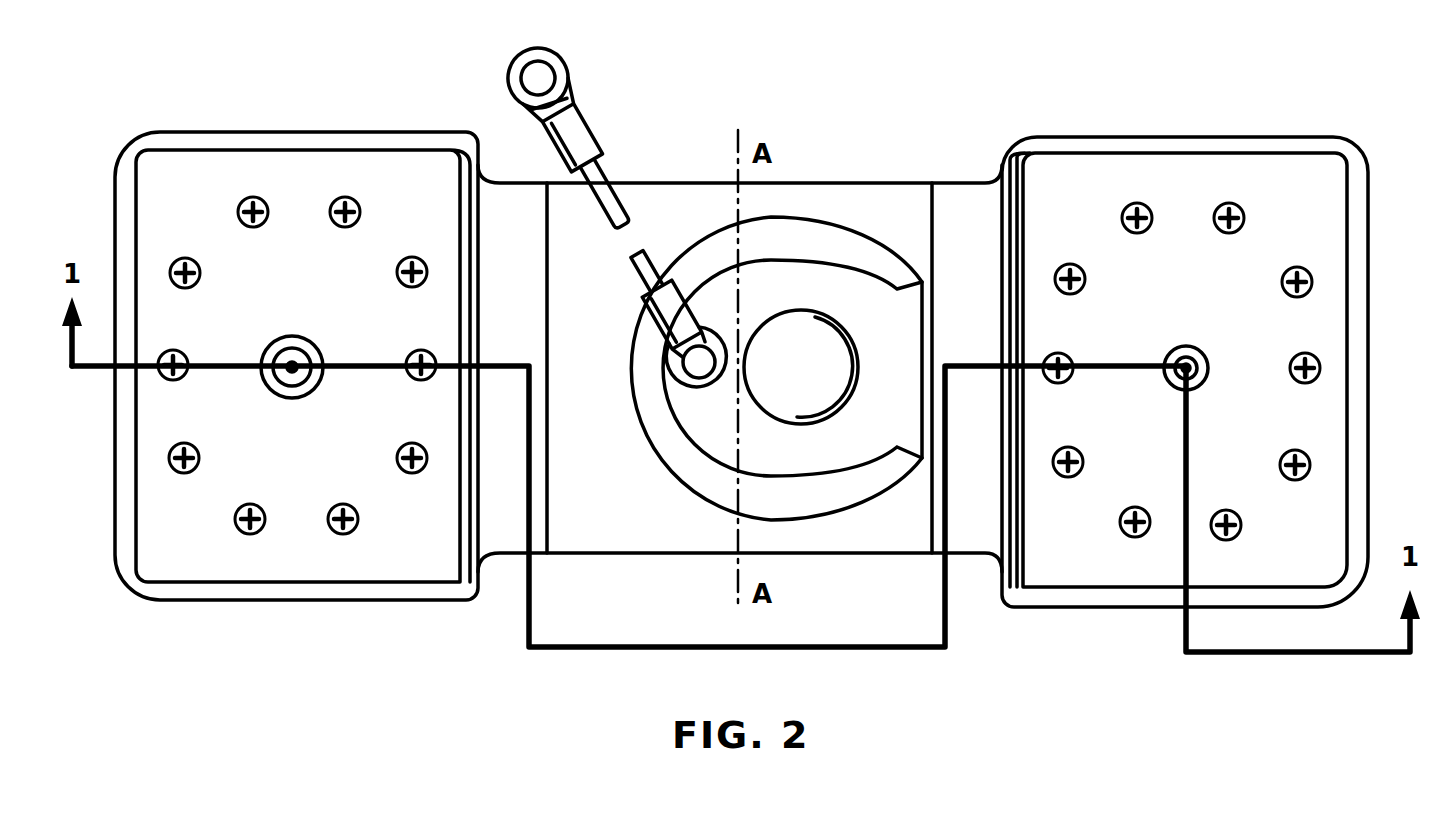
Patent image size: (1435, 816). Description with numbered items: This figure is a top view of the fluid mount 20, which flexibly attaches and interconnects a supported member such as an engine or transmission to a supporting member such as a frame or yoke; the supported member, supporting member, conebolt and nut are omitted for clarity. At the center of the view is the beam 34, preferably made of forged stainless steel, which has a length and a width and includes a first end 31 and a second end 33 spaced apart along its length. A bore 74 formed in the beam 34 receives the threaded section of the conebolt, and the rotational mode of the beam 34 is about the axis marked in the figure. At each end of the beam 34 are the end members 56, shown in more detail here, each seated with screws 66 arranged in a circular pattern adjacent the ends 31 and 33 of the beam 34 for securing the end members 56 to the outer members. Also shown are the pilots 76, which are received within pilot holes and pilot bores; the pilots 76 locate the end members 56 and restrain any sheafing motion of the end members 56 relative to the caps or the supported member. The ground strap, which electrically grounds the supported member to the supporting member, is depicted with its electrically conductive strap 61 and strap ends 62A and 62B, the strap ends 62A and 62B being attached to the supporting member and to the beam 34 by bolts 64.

The fluid mount 20 is at (98, 416).
The first end 31 is at (300, 140).
The second end 33 is at (1195, 142).
The beam 34 is at (604, 531).
The end member 56 is at (162, 174).
The strap 61 is at (657, 260).
The strap end 62A is at (583, 143).
The strap end 62B is at (670, 318).
The bolt 64 is at (706, 368).
The screw 66 is at (335, 228).
The bore 74 is at (762, 327).
The pilot 76 is at (290, 337).